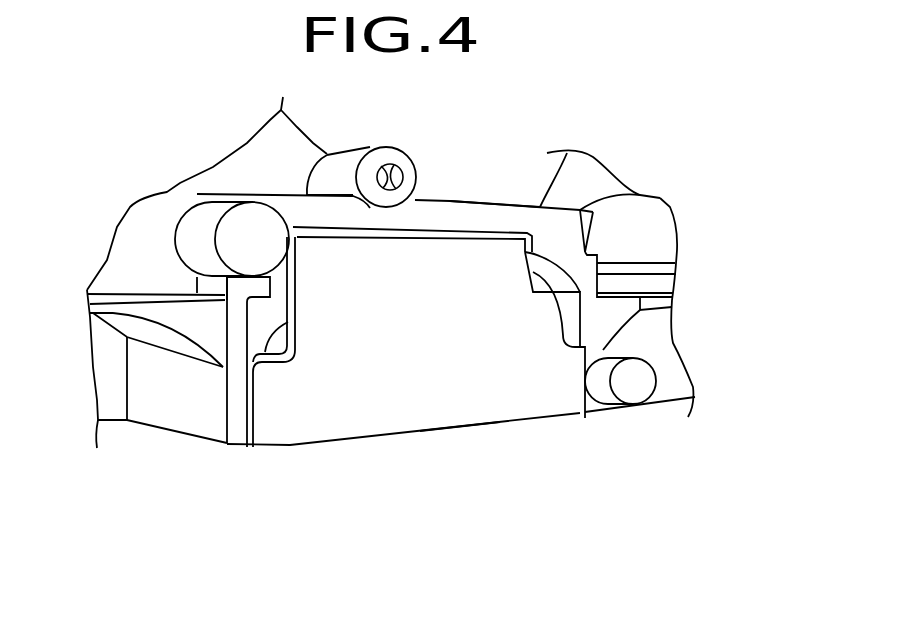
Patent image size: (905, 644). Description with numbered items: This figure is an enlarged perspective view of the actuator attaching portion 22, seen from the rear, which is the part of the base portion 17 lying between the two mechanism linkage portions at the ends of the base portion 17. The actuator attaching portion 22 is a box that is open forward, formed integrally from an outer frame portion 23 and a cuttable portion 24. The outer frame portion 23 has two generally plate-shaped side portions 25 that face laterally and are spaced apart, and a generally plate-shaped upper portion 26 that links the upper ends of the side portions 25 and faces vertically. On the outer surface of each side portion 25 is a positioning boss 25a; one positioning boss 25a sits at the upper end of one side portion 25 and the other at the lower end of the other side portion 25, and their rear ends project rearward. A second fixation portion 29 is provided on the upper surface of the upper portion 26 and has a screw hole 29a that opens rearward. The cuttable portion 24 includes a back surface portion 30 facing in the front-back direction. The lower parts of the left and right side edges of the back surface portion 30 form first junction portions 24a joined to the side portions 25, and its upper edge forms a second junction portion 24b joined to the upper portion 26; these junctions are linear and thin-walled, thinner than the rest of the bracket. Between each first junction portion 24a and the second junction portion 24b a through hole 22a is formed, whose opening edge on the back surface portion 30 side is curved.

The base portion 17 is at (160, 203).
The actuator attaching portion 22 is at (347, 423).
The through hole 22a is at (290, 407).
The outer frame portion 23 is at (442, 212).
The cuttable portion 24 is at (407, 420).
The first junction portion 24a is at (247, 413).
The second junction portion 24b is at (462, 230).
The side portion 25 is at (170, 413).
The positioning boss 25a is at (268, 217).
The upper portion 26 is at (502, 212).
The second fixation portion 29 is at (386, 148).
The screw hole 29a is at (408, 168).
The back surface portion 30 is at (457, 413).